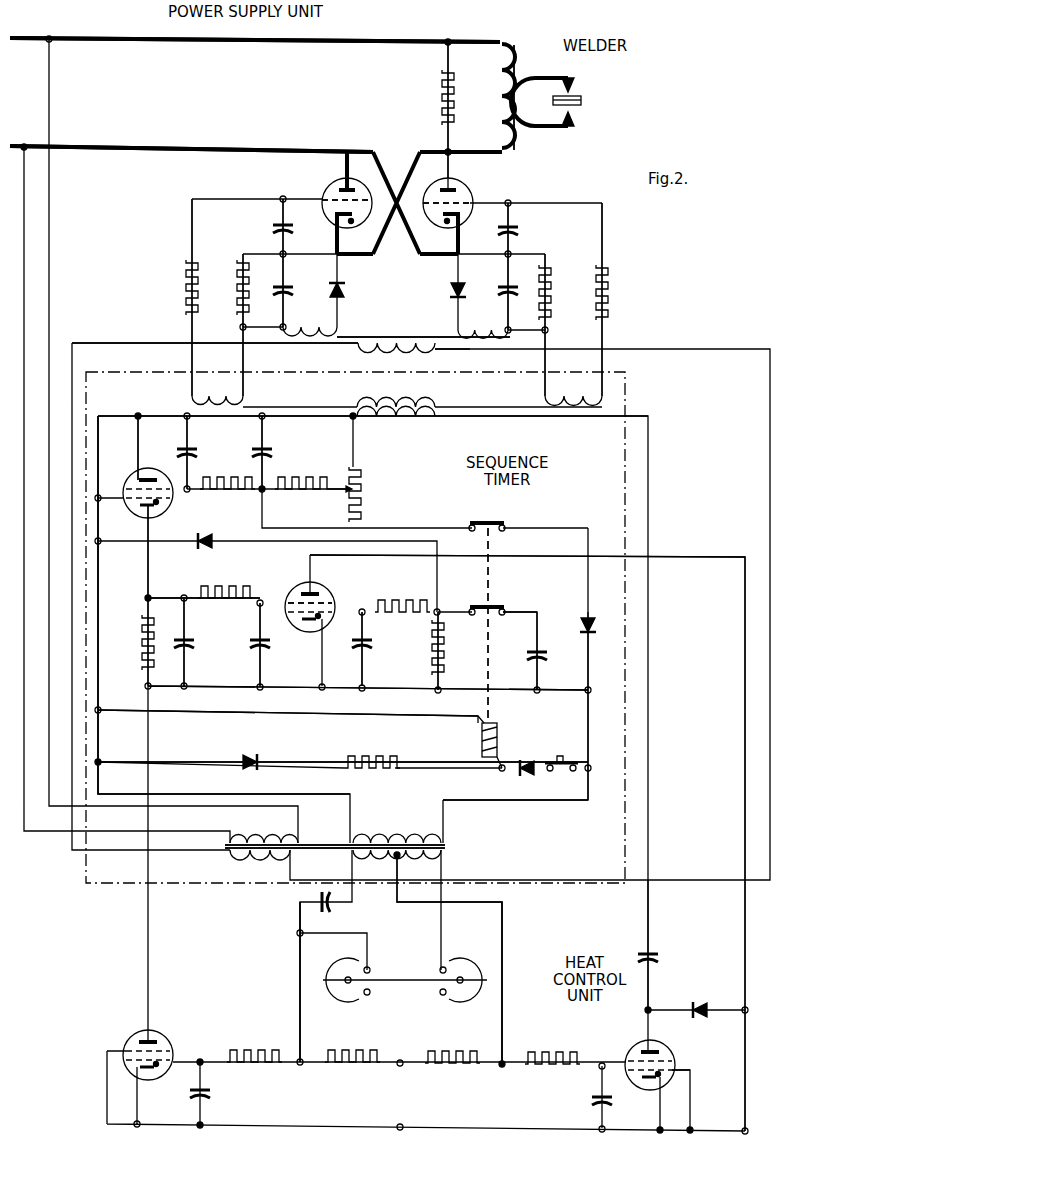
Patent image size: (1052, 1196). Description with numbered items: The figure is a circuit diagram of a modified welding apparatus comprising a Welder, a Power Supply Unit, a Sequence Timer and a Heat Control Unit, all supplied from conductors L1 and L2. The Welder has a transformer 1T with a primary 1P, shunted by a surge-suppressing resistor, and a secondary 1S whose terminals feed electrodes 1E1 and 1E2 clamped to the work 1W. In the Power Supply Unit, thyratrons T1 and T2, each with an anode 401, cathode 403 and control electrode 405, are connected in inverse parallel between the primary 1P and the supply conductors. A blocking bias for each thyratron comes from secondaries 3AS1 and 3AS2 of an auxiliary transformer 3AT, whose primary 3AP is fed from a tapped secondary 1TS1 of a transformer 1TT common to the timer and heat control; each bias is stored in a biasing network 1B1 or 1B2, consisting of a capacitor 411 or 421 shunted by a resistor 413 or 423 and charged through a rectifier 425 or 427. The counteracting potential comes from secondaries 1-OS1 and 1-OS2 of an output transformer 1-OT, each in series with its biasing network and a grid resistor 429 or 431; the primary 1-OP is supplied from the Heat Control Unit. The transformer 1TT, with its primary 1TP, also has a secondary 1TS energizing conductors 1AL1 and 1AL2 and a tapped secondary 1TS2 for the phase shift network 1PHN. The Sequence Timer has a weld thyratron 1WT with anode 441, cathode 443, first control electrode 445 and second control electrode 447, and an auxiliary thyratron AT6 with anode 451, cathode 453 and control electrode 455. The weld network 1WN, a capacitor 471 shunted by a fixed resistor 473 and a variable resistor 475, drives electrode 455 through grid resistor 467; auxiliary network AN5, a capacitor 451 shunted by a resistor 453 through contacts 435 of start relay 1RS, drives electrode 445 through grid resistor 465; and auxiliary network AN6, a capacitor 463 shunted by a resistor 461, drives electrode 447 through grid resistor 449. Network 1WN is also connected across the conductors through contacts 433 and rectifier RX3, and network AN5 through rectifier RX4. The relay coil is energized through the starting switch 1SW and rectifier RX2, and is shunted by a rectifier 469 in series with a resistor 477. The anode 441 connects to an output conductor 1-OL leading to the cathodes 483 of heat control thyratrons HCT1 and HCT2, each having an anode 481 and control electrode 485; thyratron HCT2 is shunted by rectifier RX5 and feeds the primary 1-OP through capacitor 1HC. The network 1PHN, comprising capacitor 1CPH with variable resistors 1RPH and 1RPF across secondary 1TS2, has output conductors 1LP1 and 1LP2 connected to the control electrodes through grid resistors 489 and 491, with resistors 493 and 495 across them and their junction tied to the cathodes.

The supply conductor L1 is at (99, 40).
The supply conductor L2 is at (96, 146).
The welding transformer 1T is at (511, 46).
The primary of welding transformer 1P is at (500, 90).
The secondary of welding transformer 1S is at (548, 74).
The electrode 1E1 is at (572, 79).
The electrode 1E2 is at (572, 124).
The work 1W is at (582, 100).
The thyratron T1 is at (324, 190).
The thyratron T2 is at (470, 192).
The anode 401 is at (452, 186).
The cathode 403 is at (440, 224).
The control electrode 405 is at (462, 226).
The biasing network 1B1 is at (262, 258).
The biasing network 1B2 is at (526, 254).
The grid resistor 429 is at (182, 282).
The resistor 413 is at (238, 282).
The capacitor 411 is at (292, 286).
The rectifier 425 is at (345, 288).
The rectifier 427 is at (450, 288).
The capacitor 421 is at (514, 284).
The resistor 423 is at (553, 284).
The grid resistor 431 is at (610, 284).
The secondary of auxiliary transformer 3AS1 is at (303, 322).
The secondary of auxiliary transformer 3AS2 is at (476, 332).
The auxiliary transformer 3AT is at (352, 340).
The primary of auxiliary transformer 3AP is at (392, 352).
The secondary of output transformer 1-OS1 is at (225, 392).
The secondary of output transformer 1-OS2 is at (575, 392).
The output transformer 1-OT is at (440, 410).
The primary of output transformer 1-OP is at (400, 419).
The auxiliary thyratron AT6 is at (170, 499).
The control electrode 455 is at (133, 476).
The cathode / resistor 453 is at (165, 460).
The capacitor 471 is at (254, 452).
The weld network 1WN is at (373, 605).
The grid resistor 467 is at (241, 482).
The fixed resistor 473 is at (310, 476).
The variable resistor 475 is at (360, 490).
The anode / capacitor 451 is at (140, 510).
The rectifier RX4 is at (212, 537).
The conductor 1AL1 is at (262, 790).
The normally closed contacts 433 is at (475, 526).
The normally closed contacts 435 is at (490, 610).
The start relay 1RS is at (492, 576).
The rectifier RX3 is at (602, 612).
The output conductor 1-OL is at (690, 557).
The weld thyratron 1WT is at (330, 596).
The anode 441 is at (306, 584).
The second control electrode 447 is at (292, 598).
The grid resistor 449 is at (225, 582).
The auxiliary network AN6 is at (180, 613).
The resistor 461 is at (140, 656).
The capacitor 463 is at (188, 650).
The cathode 443 is at (305, 620).
The first control electrode 445 is at (324, 622).
The grid resistor 465 is at (390, 602).
The auxiliary network AN5 is at (520, 651).
The conductor 1AL2 is at (586, 680).
The rectifier 469 is at (258, 760).
The resistor 477 is at (251, 753).
The rectifier RX2 is at (515, 760).
The starting switch 1SW is at (562, 758).
The transformer 1TT is at (306, 846).
The primary of transformer 1TT 1TP is at (252, 838).
The secondary 1TS is at (392, 838).
The secondary 1TS1 is at (256, 858).
The secondary 1TS2 is at (446, 855).
The capacitor 1CPH is at (331, 907).
The phase shift network 1PHN is at (416, 936).
The variable resistor 1RPH is at (342, 960).
The variable resistor 1RPF is at (466, 960).
The conductor 1LP1 is at (503, 944).
The conductor 1LP2 is at (299, 972).
The capacitor 1HC is at (658, 954).
The rectifier RX5 is at (698, 1004).
The heat control thyratron HCT1 is at (166, 1036).
The heat control thyratron HCT2 is at (672, 1046).
The anode 481 is at (142, 1034).
The control electrode 485 is at (120, 1050).
The cathode 483 is at (148, 1070).
The grid resistor 489 is at (250, 1052).
The resistor 493 is at (350, 1052).
The resistor 495 is at (448, 1053).
The grid resistor 491 is at (546, 1054).